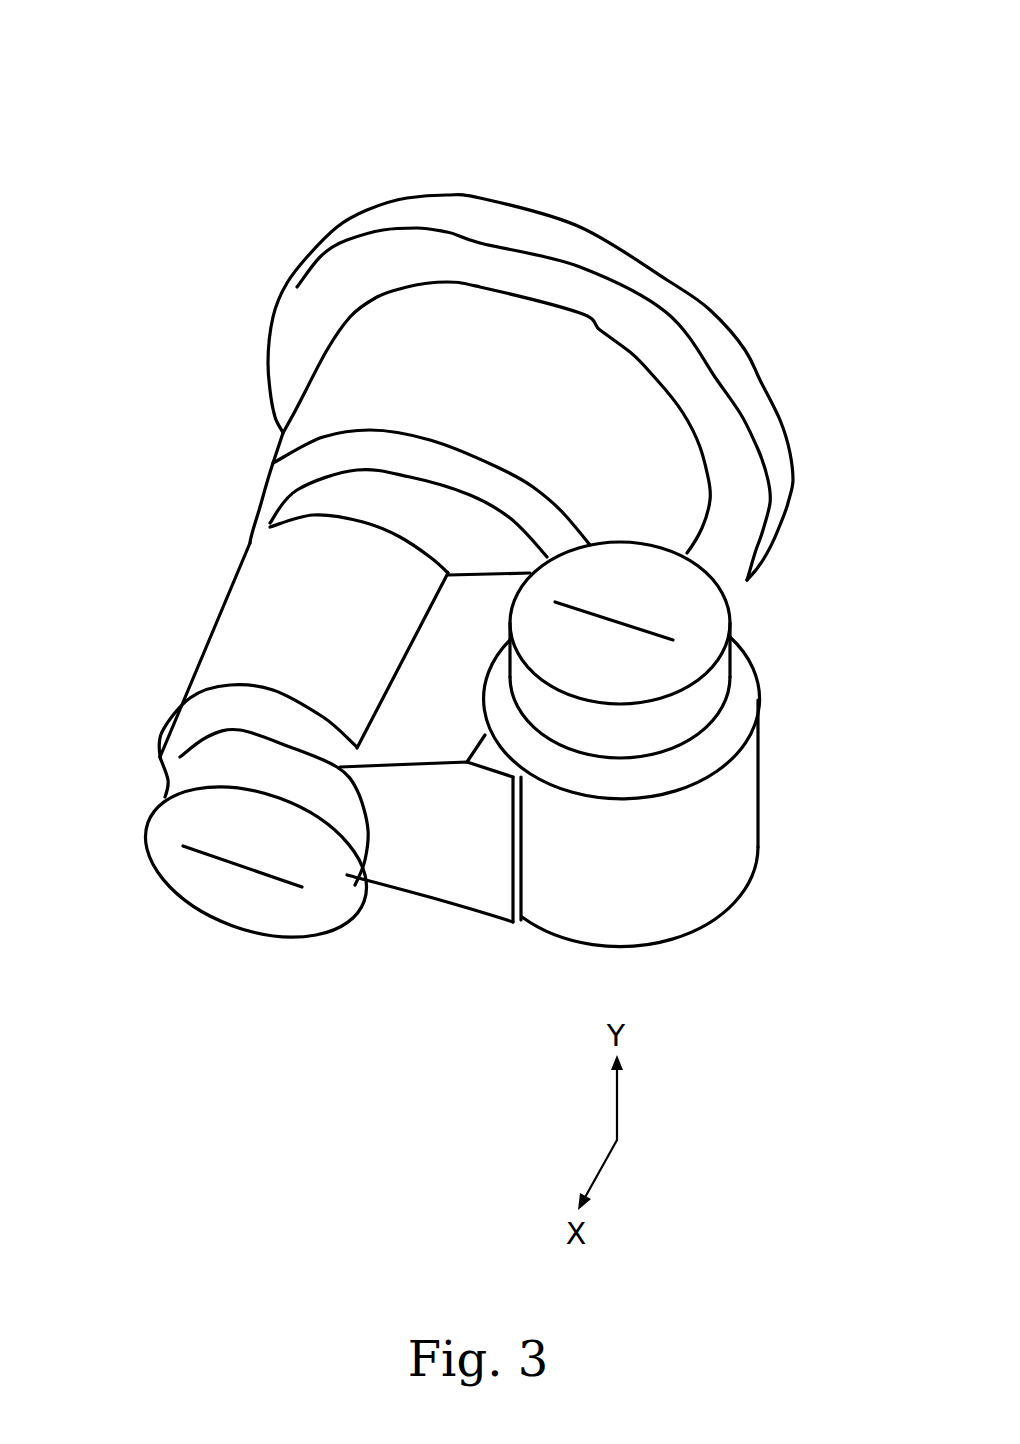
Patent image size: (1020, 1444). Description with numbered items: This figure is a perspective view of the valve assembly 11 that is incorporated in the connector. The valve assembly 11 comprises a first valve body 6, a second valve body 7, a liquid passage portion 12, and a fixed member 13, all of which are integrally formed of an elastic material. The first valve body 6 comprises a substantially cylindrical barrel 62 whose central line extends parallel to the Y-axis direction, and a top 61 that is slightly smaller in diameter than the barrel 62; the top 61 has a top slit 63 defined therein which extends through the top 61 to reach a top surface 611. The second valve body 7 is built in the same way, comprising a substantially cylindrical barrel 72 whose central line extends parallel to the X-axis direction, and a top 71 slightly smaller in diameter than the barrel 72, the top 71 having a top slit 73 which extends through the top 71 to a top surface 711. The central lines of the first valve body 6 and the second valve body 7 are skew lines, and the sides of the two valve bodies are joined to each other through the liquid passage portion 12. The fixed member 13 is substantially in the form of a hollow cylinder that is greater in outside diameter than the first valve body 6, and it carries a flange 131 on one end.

The valve assembly 11 is at (573, 135).
The liquid passage portion 12 is at (432, 832).
The fixed member 13 is at (534, 358).
The flange 131 is at (657, 347).
The first valve body 6 is at (765, 786).
The top 61 is at (680, 710).
The top surface 611 is at (667, 583).
The barrel 62 is at (685, 860).
The top slit 63 is at (675, 630).
The second valve body 7 is at (190, 667).
The top 71 is at (215, 888).
The top surface 711 is at (252, 903).
The barrel 72 is at (277, 610).
The top slit 73 is at (255, 873).